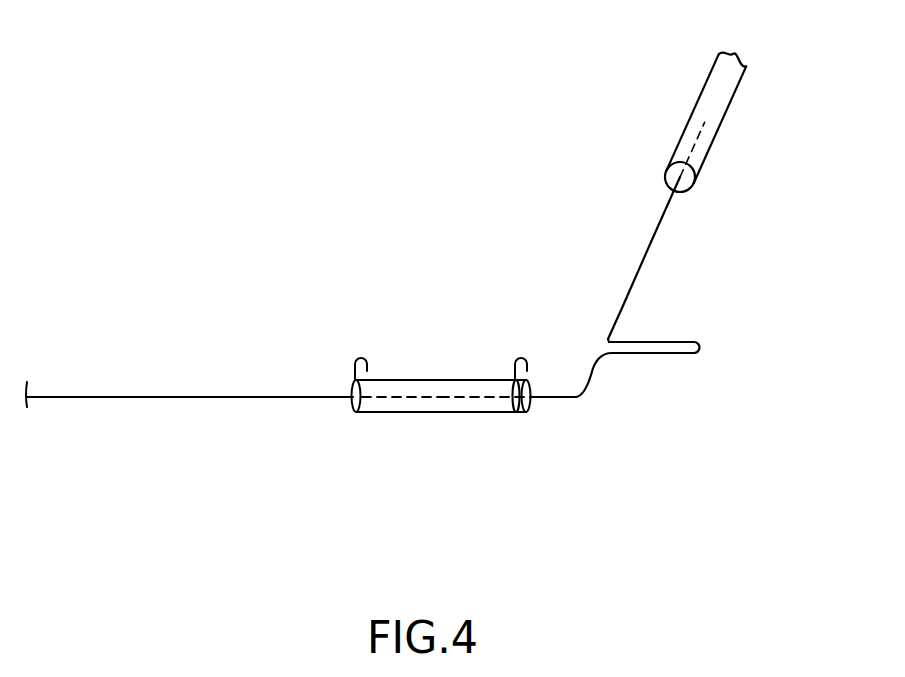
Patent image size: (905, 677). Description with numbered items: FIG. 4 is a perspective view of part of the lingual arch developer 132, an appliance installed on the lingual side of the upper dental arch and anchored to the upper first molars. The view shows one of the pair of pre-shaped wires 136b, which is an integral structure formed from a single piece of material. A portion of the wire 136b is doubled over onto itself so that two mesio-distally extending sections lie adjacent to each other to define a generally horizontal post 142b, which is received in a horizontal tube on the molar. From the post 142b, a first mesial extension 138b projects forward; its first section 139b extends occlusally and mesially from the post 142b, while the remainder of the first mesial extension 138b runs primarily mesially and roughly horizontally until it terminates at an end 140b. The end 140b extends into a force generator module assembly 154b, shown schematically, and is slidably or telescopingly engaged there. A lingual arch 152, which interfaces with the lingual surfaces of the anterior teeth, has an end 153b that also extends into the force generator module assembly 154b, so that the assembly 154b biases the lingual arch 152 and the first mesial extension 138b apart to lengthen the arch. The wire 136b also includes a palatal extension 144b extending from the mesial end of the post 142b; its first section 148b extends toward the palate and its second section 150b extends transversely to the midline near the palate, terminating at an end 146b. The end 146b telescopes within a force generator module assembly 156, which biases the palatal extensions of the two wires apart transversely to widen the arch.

The lingual arch developer 132 is at (762, 345).
The pre-shaped wire 136b is at (577, 395).
The first mesial extension 138b is at (547, 398).
The first section of first mesial extension 139b is at (587, 380).
The end of wire 140b is at (455, 395).
The post 142b is at (695, 360).
The palatal extension 144b is at (632, 282).
The end of wire 146b is at (705, 120).
The first section of palatal extension 148b is at (612, 333).
The second section of palatal extension 150b is at (647, 250).
The lingual arch 152 is at (157, 397).
The end of lingual arch 153b is at (405, 395).
The force generator module assembly 154b is at (417, 380).
The force generator module assembly 156 is at (738, 93).